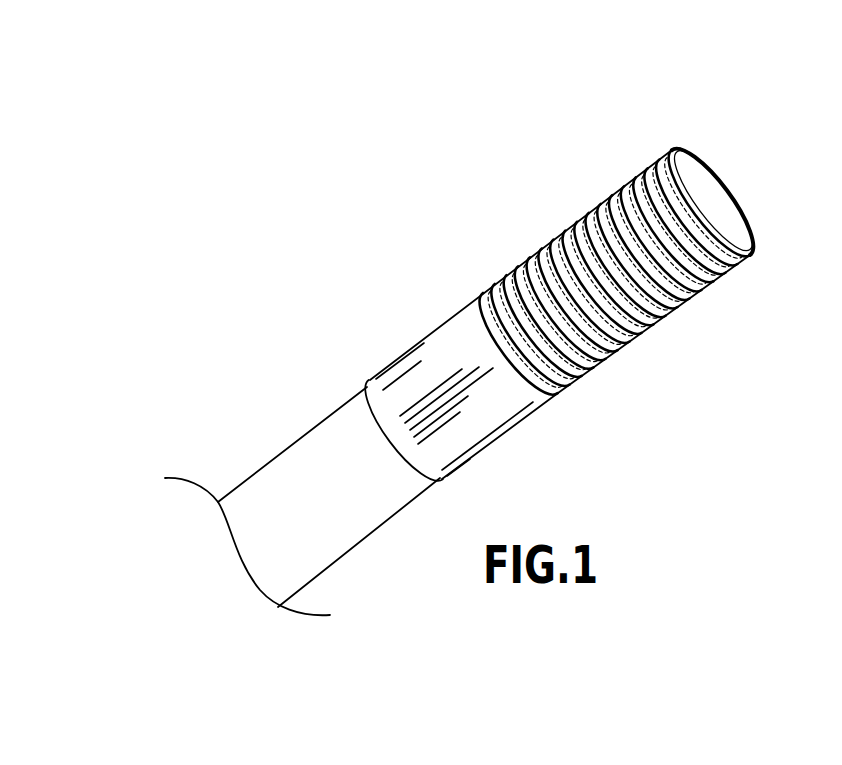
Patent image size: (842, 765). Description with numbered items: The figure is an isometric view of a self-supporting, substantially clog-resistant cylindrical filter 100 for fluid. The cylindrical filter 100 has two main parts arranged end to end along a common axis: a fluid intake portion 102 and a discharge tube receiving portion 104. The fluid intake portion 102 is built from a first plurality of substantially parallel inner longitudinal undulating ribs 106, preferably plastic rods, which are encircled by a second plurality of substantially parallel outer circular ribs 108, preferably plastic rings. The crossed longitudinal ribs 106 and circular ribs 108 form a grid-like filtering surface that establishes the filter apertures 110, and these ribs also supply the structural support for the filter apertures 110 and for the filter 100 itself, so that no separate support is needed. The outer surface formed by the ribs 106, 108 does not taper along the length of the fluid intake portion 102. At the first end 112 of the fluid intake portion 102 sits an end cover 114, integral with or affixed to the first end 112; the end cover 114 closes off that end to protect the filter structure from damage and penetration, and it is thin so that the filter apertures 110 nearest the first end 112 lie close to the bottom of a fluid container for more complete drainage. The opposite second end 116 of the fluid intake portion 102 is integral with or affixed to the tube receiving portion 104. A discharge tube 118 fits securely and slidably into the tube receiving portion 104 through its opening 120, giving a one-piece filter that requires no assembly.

The cylindrical filter 100 is at (343, 217).
The fluid intake portion 102 is at (679, 386).
The discharge tube receiving portion 104 is at (319, 318).
The inner longitudinal undulating ribs 106 is at (552, 246).
The outer circular ribs 108 is at (597, 368).
The filter apertures 110 is at (698, 293).
The first end 112 is at (667, 148).
The end cover 114 is at (707, 188).
The second end 116 is at (558, 393).
The discharge tube 118 is at (262, 517).
The opening 120 is at (395, 448).